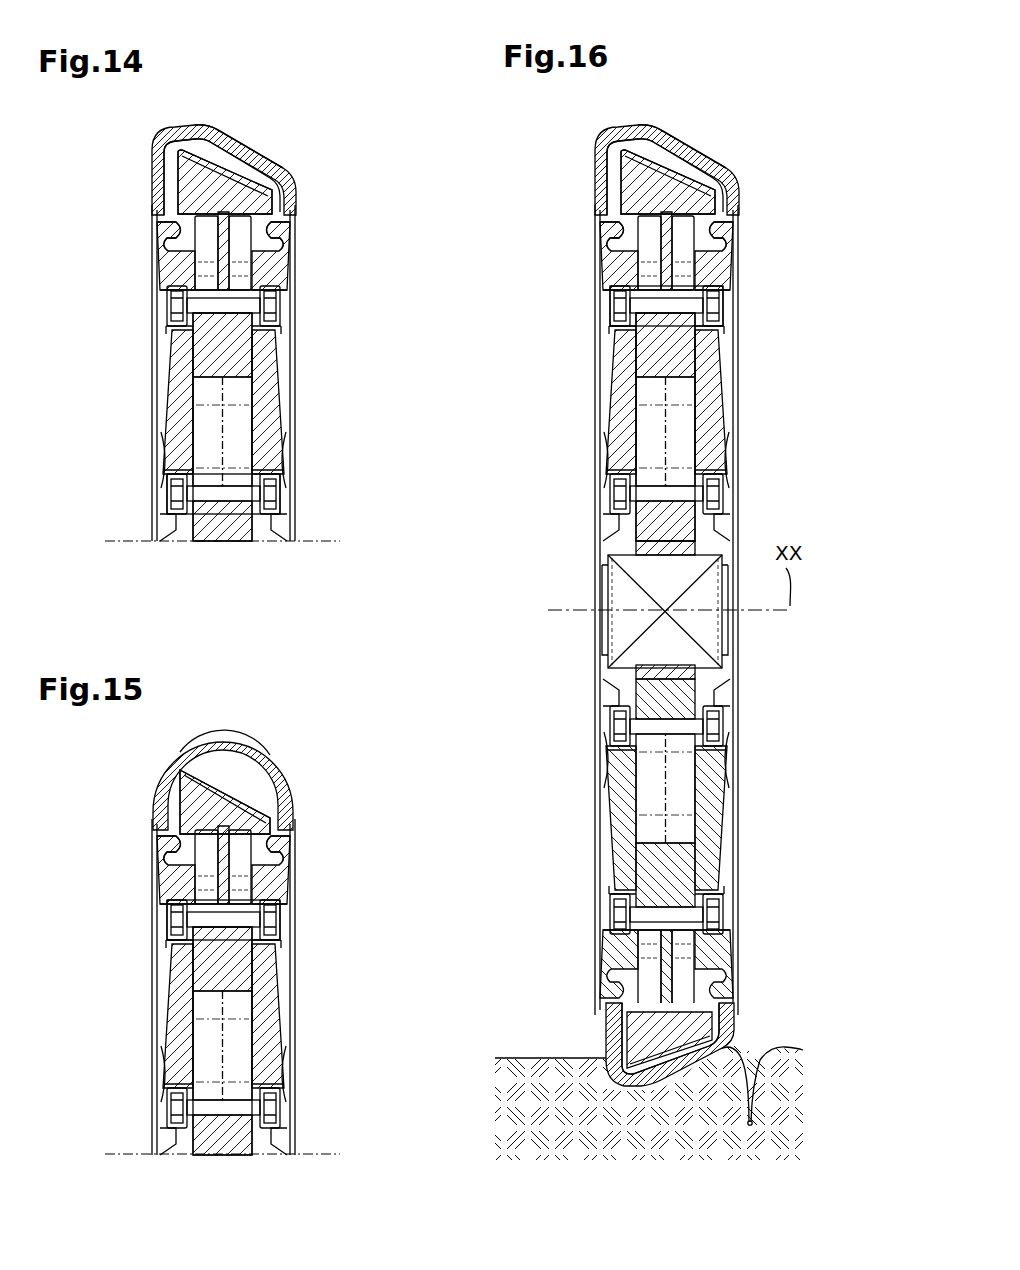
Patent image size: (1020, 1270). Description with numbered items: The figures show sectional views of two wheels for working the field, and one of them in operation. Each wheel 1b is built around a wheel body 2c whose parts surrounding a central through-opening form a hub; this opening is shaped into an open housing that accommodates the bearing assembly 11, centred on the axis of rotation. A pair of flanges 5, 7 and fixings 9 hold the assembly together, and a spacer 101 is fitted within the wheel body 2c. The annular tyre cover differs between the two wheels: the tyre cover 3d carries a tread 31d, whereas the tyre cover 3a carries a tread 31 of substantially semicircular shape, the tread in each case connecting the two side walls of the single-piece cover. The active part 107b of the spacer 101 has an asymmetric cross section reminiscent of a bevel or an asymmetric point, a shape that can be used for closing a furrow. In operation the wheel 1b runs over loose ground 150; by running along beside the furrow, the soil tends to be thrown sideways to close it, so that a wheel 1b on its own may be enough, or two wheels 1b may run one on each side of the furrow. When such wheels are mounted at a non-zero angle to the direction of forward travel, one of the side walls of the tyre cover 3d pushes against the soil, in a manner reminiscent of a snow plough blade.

In FIG. 14, the wheel 1b is at (112, 162).
In FIG. 15, the wheel 1b is at (115, 782).
In FIG. 16, the wheel 1b is at (566, 162).
In FIG. 14, the wheel body 2c is at (118, 380).
In FIG. 15, the wheel body 2c is at (118, 1000).
In FIG. 16, the wheel body 2c is at (555, 813).
In FIG. 14, the tyre cover 3d is at (283, 170).
In FIG. 16, the tyre cover 3d is at (726, 168).
In FIG. 15, the tyre cover 3a is at (284, 766).
In FIG. 14, the tread 31d is at (229, 131).
In FIG. 16, the tread 31d is at (672, 131).
In FIG. 15, the tread 31 is at (225, 744).
In FIG. 14, the active part 107b is at (235, 183).
In FIG. 15, the active part 107b is at (235, 795).
In FIG. 16, the active part 107b is at (678, 183).
In FIG. 14, the flange 5 is at (178, 266).
In FIG. 15, the flange 5 is at (178, 880).
In FIG. 16, the flange 5 is at (621, 266).
In FIG. 14, the flange 7 is at (265, 266).
In FIG. 15, the flange 7 is at (265, 880).
In FIG. 16, the flange 7 is at (708, 266).
In FIG. 14, the fixings 9 is at (270, 495).
In FIG. 15, the fixings 9 is at (272, 918).
In FIG. 16, the fixings 9 is at (708, 305).
In FIG. 14, the spacer 101 is at (232, 349).
In FIG. 15, the spacer 101 is at (232, 963).
In FIG. 16, the spacer 101 is at (676, 349).
In FIG. 16, the bearing assembly 11 is at (628, 628).
In FIG. 16, the loose ground 150 is at (543, 1058).